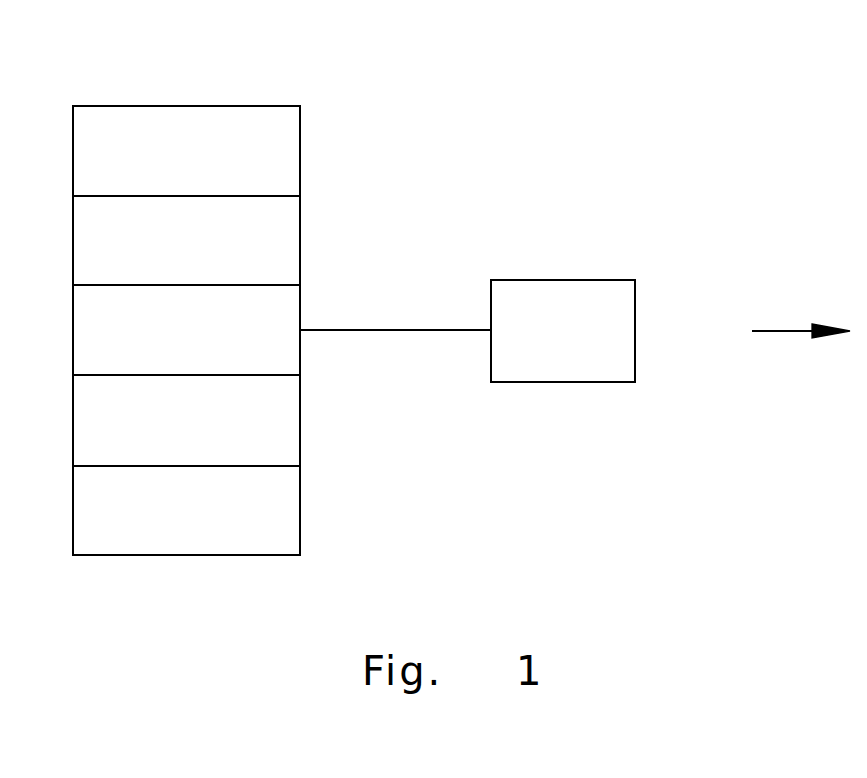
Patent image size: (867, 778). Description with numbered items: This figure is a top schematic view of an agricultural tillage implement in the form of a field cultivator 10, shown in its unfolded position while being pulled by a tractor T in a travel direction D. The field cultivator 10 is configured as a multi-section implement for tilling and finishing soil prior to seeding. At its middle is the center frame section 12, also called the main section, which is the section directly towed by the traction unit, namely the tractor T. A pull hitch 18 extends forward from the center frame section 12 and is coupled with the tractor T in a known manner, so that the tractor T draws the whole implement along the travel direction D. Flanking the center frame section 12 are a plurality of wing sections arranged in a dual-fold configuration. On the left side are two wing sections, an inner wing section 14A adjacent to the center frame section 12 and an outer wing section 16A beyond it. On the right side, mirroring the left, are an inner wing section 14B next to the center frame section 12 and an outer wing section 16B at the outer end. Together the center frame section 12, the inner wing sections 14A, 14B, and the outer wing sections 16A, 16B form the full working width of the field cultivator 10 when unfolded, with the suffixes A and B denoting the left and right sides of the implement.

The field cultivator 10 is at (300, 106).
The left outer wing section 16A is at (186, 151).
The left inner wing section 14A is at (186, 240).
The center frame section 12 is at (186, 330).
The right inner wing section 14B is at (186, 420).
The right outer wing section 16B is at (186, 510).
The pull hitch 18 is at (367, 330).
The tractor T is at (578, 280).
The travel direction D is at (790, 331).